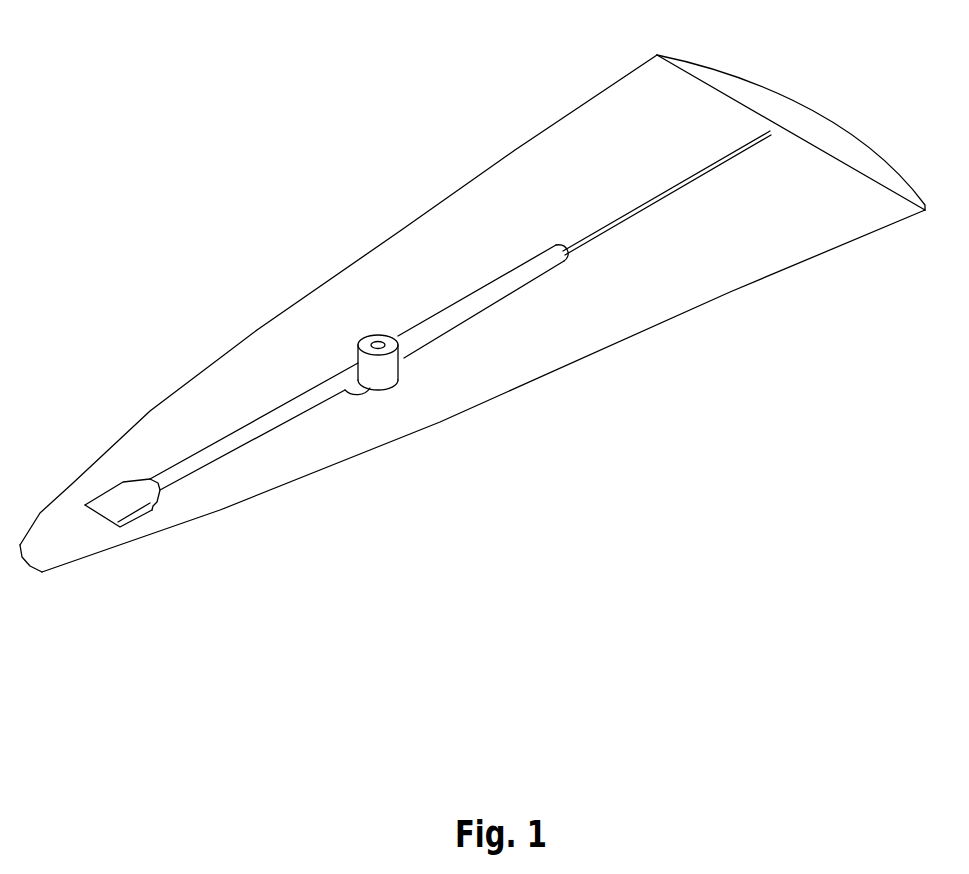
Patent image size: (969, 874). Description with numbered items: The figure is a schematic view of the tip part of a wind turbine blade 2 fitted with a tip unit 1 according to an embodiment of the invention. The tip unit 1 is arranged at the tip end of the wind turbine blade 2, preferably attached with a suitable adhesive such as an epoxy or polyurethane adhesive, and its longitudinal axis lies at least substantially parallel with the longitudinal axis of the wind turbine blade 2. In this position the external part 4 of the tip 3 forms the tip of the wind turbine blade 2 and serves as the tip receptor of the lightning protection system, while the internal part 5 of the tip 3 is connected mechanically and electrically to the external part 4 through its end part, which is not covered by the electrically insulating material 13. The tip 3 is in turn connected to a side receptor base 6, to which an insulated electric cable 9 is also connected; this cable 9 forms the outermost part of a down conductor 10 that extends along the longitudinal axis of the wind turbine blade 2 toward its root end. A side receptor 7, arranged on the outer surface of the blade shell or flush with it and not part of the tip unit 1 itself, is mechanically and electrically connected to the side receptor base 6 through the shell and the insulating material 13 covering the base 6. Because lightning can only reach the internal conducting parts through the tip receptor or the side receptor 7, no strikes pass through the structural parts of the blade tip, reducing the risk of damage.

The tip unit 1 is at (273, 413).
The wind turbine blade 2 is at (528, 347).
The tip 3 is at (88, 517).
The external part of the tip 4 is at (33, 552).
The internal part of the tip 5 is at (118, 498).
The side receptor base 6 is at (402, 372).
The side receptor 7 is at (380, 340).
The insulated electric cable 9 is at (597, 235).
The down conductor 10 is at (745, 147).
The electrically insulating material 13 is at (513, 277).